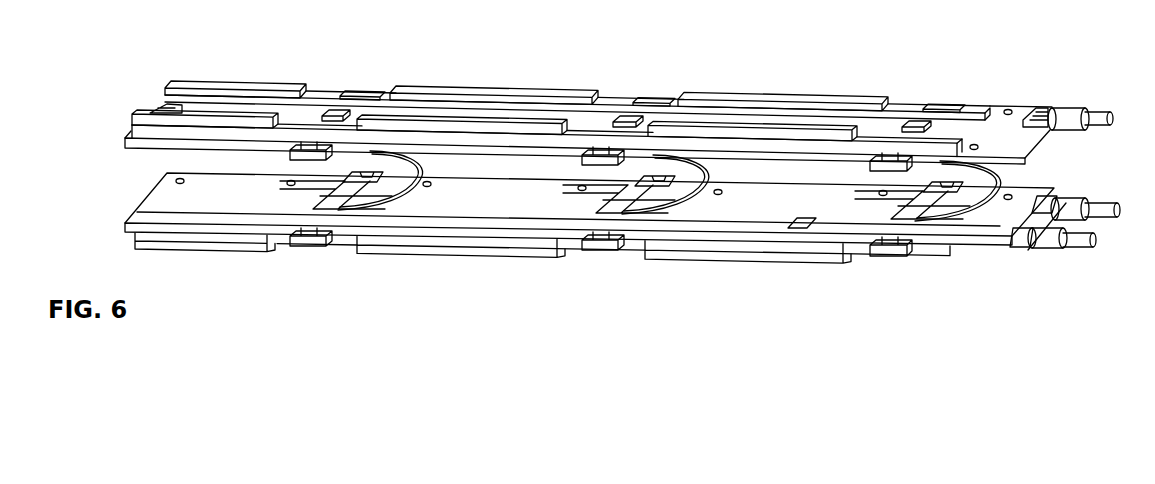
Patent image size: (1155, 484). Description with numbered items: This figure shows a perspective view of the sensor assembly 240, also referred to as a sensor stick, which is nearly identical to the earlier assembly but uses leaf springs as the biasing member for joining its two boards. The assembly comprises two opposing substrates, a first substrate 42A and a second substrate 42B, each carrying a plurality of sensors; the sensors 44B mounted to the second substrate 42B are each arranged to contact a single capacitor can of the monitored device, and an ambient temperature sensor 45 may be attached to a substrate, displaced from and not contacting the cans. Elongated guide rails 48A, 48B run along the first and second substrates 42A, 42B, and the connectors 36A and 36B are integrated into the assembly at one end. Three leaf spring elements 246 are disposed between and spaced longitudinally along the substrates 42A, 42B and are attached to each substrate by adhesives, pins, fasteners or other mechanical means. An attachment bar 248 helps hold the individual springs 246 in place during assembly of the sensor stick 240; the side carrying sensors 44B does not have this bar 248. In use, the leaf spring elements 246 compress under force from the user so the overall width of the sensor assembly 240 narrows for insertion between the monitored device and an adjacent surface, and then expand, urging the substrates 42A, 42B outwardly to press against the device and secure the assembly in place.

The sensor assembly 240 is at (150, 46).
The elongated guide rail 48B is at (197, 83).
The sensors 44B is at (333, 110).
The ambient temperature sensor 45 is at (165, 112).
The second substrate 42B is at (125, 137).
The first substrate 42A is at (125, 222).
The elongated guide rail 48A is at (182, 250).
The leaf spring elements 246 is at (438, 156).
The attachment bar 248 is at (797, 228).
The connector 36B is at (1066, 112).
The connector 36A is at (1078, 207).